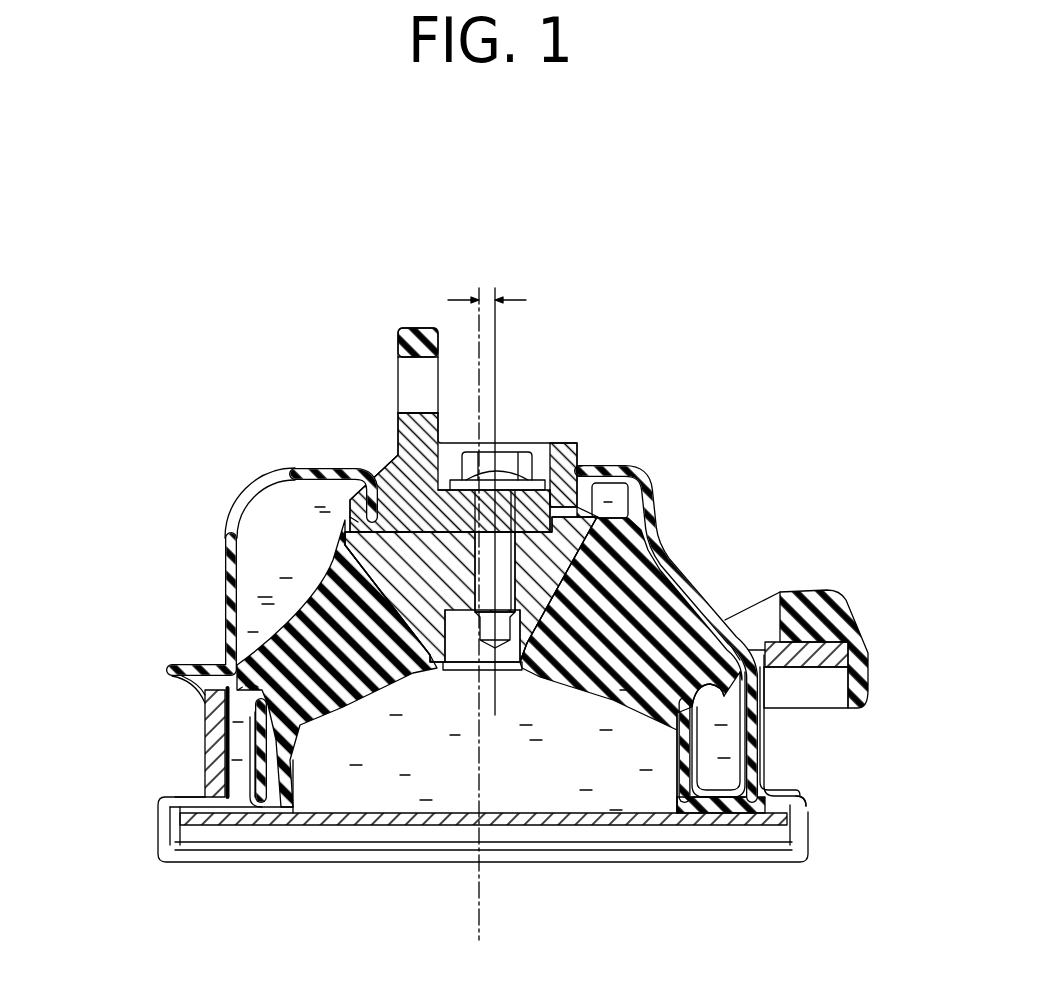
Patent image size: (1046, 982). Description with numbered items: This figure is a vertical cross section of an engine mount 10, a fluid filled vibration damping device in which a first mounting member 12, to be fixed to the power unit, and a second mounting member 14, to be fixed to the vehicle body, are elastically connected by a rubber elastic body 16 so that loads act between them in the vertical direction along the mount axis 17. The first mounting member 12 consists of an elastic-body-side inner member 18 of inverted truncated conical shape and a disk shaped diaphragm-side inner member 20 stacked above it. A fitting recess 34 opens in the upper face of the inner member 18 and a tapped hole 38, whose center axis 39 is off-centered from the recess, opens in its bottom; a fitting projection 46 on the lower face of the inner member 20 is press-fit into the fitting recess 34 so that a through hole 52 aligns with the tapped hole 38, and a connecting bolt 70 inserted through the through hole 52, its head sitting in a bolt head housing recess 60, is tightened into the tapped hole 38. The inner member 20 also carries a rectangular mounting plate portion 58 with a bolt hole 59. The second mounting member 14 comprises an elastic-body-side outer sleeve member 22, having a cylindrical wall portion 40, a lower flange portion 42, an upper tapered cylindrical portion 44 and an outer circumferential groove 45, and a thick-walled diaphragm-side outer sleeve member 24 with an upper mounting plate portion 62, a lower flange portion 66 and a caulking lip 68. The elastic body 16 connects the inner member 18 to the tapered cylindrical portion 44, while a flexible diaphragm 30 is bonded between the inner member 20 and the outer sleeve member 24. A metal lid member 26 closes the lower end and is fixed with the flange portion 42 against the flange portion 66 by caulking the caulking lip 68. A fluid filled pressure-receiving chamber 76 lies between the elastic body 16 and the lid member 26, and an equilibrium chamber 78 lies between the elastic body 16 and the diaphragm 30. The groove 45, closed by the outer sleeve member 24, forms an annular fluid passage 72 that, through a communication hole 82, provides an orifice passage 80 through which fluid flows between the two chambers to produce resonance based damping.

The engine mount 10 is at (725, 405).
The first mounting member 12 is at (212, 388).
The second mounting member 14 is at (886, 738).
The rubber elastic body 16 is at (333, 700).
The central axis of mount 17 is at (479, 905).
The elastic-body-side inner member 18 is at (350, 517).
The diaphragm-side inner member 20 is at (383, 453).
The elastic-body-side outer sleeve member 22 is at (700, 760).
The diaphragm-side outer sleeve member 24 is at (764, 730).
The lid member 26 is at (633, 818).
The flexible diaphragm 30 is at (227, 558).
The fitting recess 34 is at (458, 533).
The tapped hole 38 is at (504, 566).
The center axis of the tapped hole 39 is at (497, 328).
The cylindrical wall portion 40 is at (246, 738).
The flange portion 42 is at (203, 812).
The tapered cylindrical portion 44 is at (700, 668).
The circumferential groove 45 is at (722, 813).
The fitting projection 46 is at (532, 560).
The through hole 52 is at (525, 520).
The mounting plate portion 58 is at (414, 343).
The bolt hole 59 is at (417, 413).
The bolt head housing recess 60 is at (552, 443).
The mounting plate portion 62 is at (800, 670).
The flange portion 66 is at (792, 785).
The caulking lip 68 is at (163, 833).
The connecting bolt 70 is at (502, 460).
The annular fluid passage 72 is at (236, 773).
The pressure-receiving chamber 76 is at (575, 757).
The equilibrium chamber 78 is at (298, 562).
The orifice passage 80 is at (216, 742).
The communication hole 82 is at (248, 703).